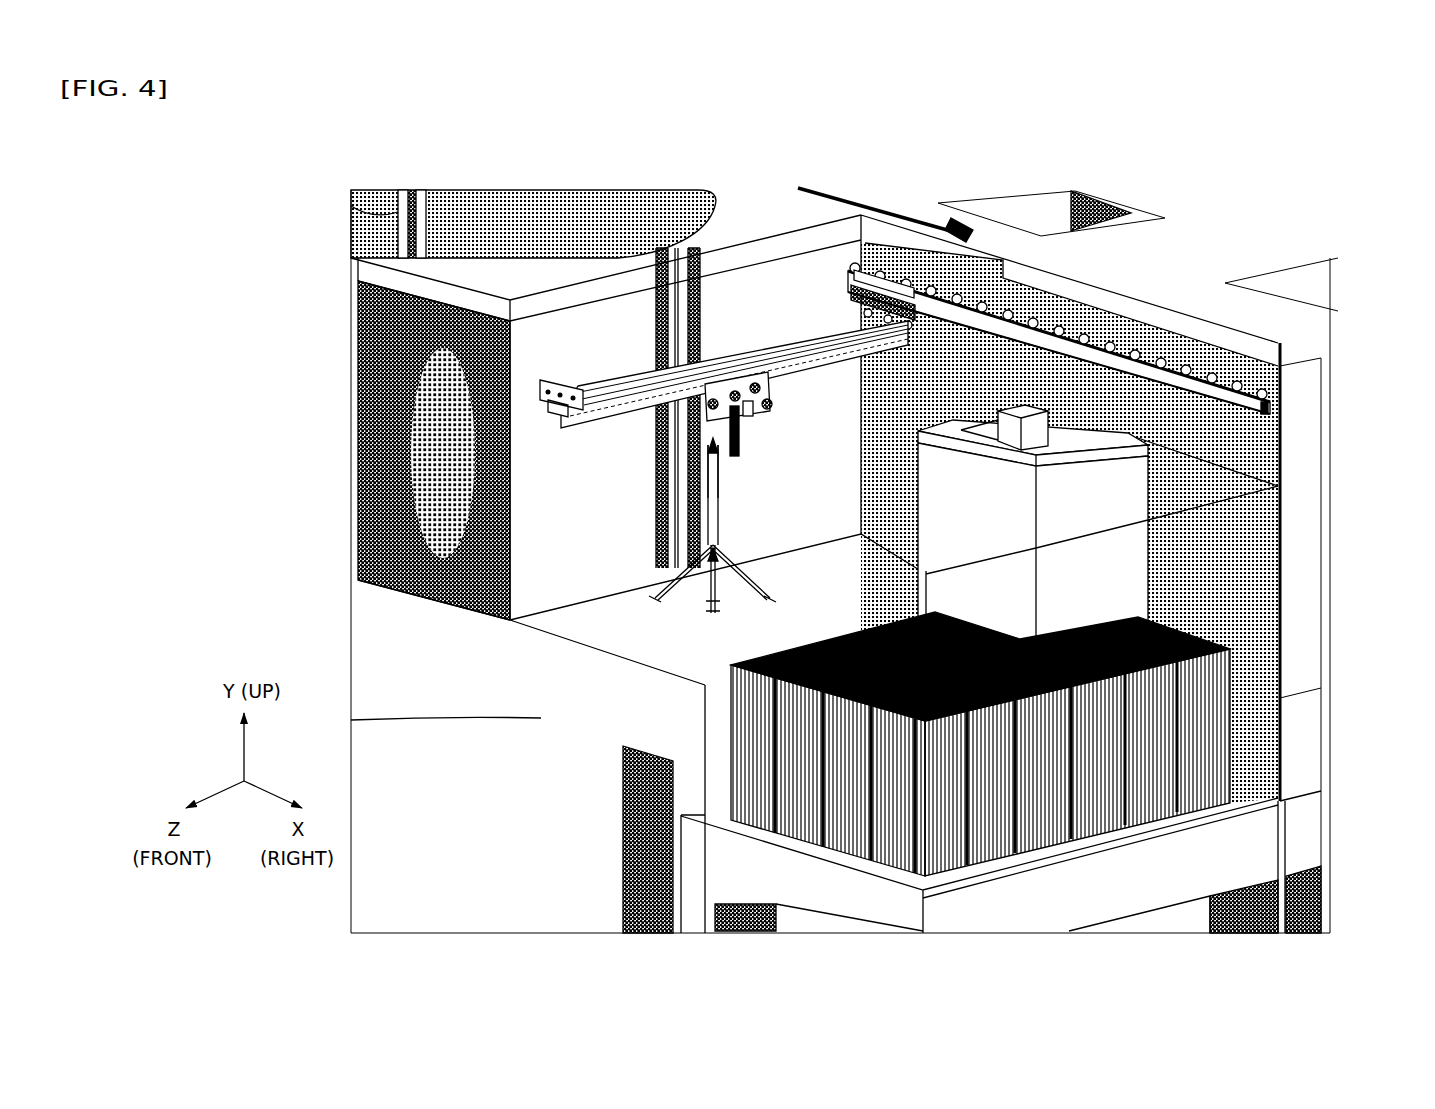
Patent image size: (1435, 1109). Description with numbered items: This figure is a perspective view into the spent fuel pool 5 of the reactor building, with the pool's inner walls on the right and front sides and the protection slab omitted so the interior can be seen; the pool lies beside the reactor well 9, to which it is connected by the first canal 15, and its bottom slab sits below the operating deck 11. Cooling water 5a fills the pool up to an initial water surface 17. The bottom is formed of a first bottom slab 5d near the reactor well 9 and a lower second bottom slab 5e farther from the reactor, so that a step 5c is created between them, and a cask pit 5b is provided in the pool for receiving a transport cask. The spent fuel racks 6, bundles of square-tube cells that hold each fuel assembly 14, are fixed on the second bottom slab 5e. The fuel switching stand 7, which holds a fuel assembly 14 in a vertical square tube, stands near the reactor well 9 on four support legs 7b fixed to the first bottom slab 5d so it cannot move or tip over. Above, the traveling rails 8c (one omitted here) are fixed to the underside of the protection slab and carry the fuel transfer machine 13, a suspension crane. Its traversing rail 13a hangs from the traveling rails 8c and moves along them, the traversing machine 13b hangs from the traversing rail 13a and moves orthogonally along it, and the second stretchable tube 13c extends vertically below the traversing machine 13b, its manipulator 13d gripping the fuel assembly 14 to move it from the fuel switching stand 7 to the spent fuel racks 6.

The spent fuel pool 5 is at (813, 218).
The cooling water 5a is at (1053, 330).
The cask pit 5b is at (1050, 427).
The step 5c is at (700, 735).
The first bottom slab 5d is at (567, 623).
The second bottom slab 5e is at (1247, 790).
The spent fuel racks 6 is at (1228, 668).
The fuel switching stand 7 is at (692, 523).
The support legs 7b is at (650, 575).
The traveling rails 8c is at (988, 287).
The reactor well 9 is at (502, 207).
The operating deck 11 is at (1222, 207).
The fuel transfer machine 13 is at (752, 322).
The traversing rail 13a is at (607, 390).
The traversing machine 13b is at (717, 370).
The second stretchable tube 13c is at (733, 453).
The manipulator 13d is at (893, 397).
The fuel assembly 14 is at (693, 463).
The first canal 15 is at (668, 238).
The initial water surface 17 is at (1216, 460).